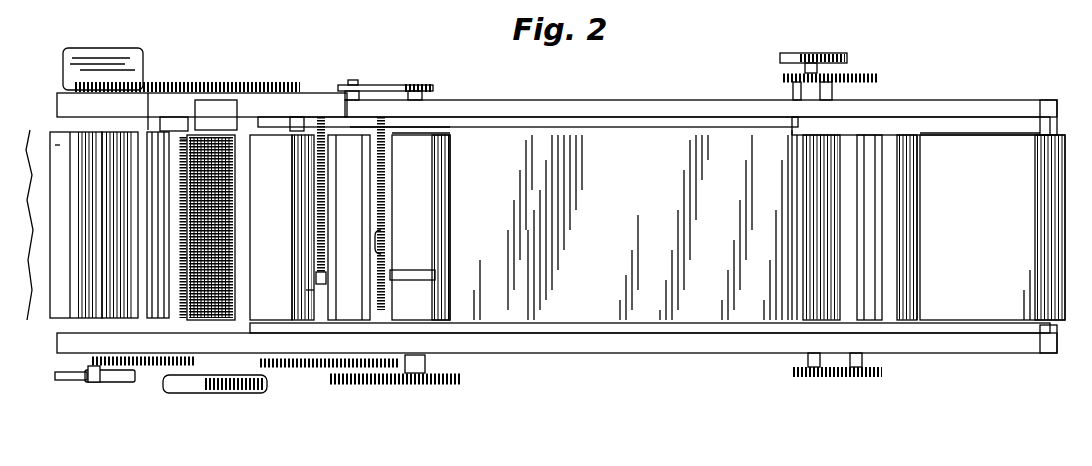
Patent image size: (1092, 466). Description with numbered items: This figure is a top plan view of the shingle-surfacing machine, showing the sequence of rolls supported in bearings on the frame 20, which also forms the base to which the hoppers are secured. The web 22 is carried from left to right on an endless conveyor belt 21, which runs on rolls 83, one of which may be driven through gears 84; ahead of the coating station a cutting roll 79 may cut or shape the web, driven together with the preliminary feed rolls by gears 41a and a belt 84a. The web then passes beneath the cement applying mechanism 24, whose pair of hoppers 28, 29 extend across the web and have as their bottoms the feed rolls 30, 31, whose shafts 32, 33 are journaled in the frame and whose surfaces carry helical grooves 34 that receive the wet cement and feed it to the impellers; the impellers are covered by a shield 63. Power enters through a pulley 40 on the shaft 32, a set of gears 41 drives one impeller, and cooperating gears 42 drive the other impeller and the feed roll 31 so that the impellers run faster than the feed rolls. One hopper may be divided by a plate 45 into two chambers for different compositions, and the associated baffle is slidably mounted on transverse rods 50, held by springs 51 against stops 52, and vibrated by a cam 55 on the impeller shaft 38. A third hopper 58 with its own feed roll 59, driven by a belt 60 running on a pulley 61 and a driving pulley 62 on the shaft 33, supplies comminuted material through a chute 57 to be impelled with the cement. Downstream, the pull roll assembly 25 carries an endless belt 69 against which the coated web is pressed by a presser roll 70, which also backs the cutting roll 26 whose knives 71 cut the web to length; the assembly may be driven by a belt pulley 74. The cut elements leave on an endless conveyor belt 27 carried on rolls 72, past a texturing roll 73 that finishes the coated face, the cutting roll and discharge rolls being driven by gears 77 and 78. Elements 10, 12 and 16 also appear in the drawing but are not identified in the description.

The roller 10 is at (118, 170).
The roller 12 is at (58, 145).
The nut 16 is at (316, 275).
The frame 20 is at (660, 110).
The endless conveyor belt 21 is at (530, 112).
The web 22 is at (60, 150).
The cement applying mechanism 24 is at (190, 125).
The pull roll assembly 25 is at (942, 192).
The cutting roll 26 is at (852, 145).
The endless conveyor belt 27 is at (996, 128).
The hopper 28 is at (195, 176).
The hopper 29 is at (470, 125).
The feed roll 30 is at (184, 142).
The feed roll 31 is at (420, 158).
The shaft 32 is at (212, 122).
The shaft 33 is at (430, 132).
The helical grooves 34 is at (184, 258).
The shaft 38 is at (330, 120).
The pulley 40 is at (193, 386).
The set of gears 41 is at (258, 84).
The gears 41a is at (108, 82).
The cooperating gears 42 is at (324, 376).
The plate 45 is at (420, 274).
The transverse rods 50 is at (318, 224).
The springs 51 is at (400, 118).
The stops 52 is at (306, 292).
The cam 55 is at (316, 370).
The chute 57 is at (296, 120).
The third hopper 58 is at (386, 224).
The feed roll 59 is at (352, 198).
The belt 60 is at (372, 85).
The pulley 61 is at (355, 80).
The driving pulley 62 is at (420, 84).
The shield 63 is at (282, 227).
The endless belt 69 is at (790, 164).
The presser roll 70 is at (830, 132).
The knives 71 is at (882, 160).
The rolls 72 is at (1050, 128).
The texturing roll 73 is at (920, 155).
The belt pulley 74 is at (790, 58).
The gears 77 is at (838, 380).
The gears 78 is at (858, 76).
The cutting roll 79 is at (110, 190).
The rolls 83 is at (152, 120).
The gears 84 is at (160, 366).
The belt 84a is at (102, 383).